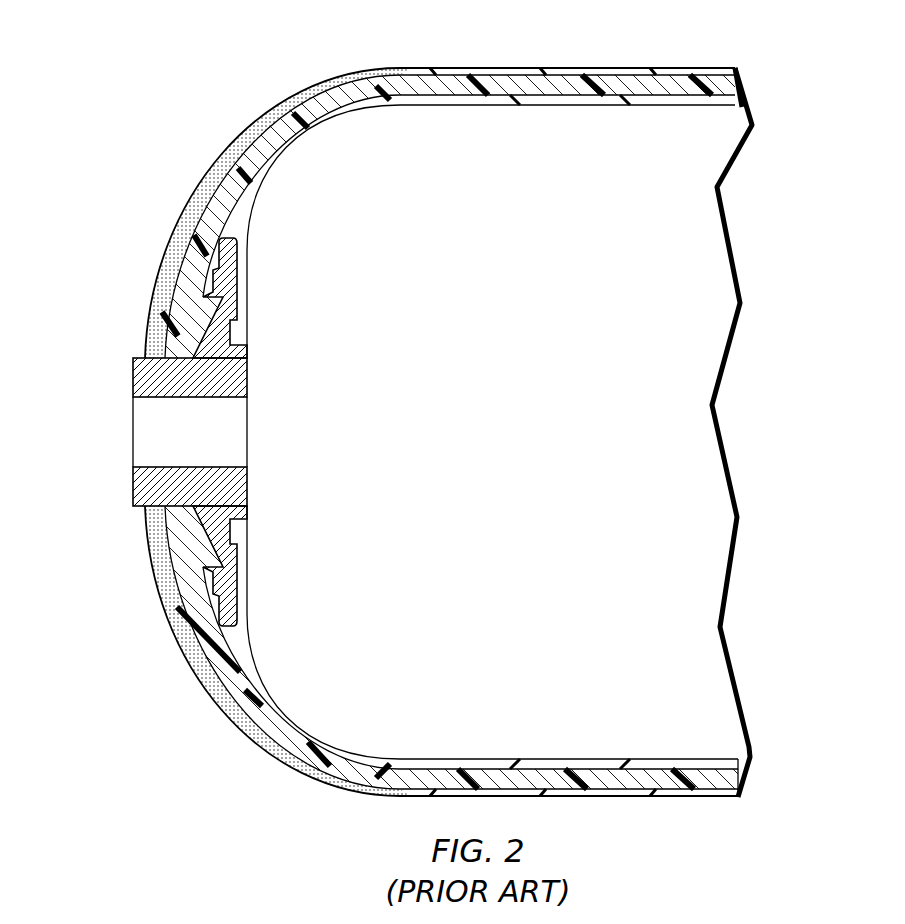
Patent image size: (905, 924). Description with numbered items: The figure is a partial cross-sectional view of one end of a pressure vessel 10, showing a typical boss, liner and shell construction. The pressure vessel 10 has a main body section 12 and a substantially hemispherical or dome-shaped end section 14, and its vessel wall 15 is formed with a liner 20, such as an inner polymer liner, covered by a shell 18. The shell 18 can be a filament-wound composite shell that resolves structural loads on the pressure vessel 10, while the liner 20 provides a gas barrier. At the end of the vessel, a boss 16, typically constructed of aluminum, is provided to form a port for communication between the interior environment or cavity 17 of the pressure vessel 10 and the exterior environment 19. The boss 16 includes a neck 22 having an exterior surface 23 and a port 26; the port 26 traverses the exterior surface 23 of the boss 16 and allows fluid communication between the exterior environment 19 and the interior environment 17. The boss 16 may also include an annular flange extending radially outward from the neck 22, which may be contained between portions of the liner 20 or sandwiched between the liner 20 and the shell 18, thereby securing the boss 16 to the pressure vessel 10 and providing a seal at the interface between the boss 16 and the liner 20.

The pressure vessel 10 is at (155, 131).
The main body section 12 is at (693, 78).
The end section 14 is at (233, 128).
The vessel wall 15 is at (762, 750).
The boss 16 is at (222, 300).
The interior environment 17 is at (492, 432).
The shell 18 is at (606, 62).
The exterior environment 19 is at (176, 432).
The liner 20 is at (742, 97).
The neck 22 is at (160, 380).
The exterior surface 23 is at (135, 472).
The port 26 is at (190, 432).